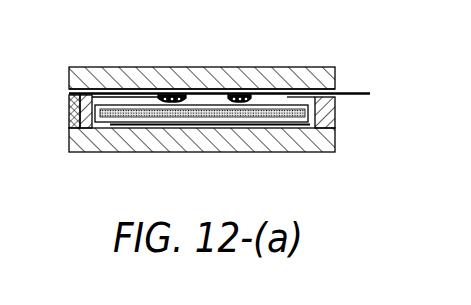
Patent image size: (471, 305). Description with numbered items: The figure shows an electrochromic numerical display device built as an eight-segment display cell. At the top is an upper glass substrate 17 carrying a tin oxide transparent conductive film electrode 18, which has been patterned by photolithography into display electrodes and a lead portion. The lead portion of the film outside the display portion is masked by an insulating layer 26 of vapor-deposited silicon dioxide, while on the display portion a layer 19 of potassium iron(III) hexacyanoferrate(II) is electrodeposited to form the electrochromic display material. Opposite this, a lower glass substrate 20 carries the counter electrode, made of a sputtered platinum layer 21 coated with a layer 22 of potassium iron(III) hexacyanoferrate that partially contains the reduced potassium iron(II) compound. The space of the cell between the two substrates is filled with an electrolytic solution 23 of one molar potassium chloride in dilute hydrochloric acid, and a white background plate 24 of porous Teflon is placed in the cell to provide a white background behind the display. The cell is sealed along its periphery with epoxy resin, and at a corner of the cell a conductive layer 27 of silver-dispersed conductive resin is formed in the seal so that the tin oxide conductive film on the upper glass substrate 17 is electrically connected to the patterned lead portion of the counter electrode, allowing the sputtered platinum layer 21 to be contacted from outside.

The upper glass substrate 17 is at (290, 75).
The tin oxide transparent conductive film electrode 18 is at (236, 94).
The layer of potassium iron(III) hexacyanoferrate(II) 19 is at (173, 95).
The lower glass substrate 20 is at (103, 143).
The sputtered platinum layer 21 is at (217, 127).
The layer of potassium iron(III) hexacyanoferrate 22 is at (165, 130).
The electrolytic solution 23 is at (312, 131).
The white background plate 24 is at (278, 124).
The insulating layer 26 is at (110, 89).
The conductive layer 27 is at (69, 117).